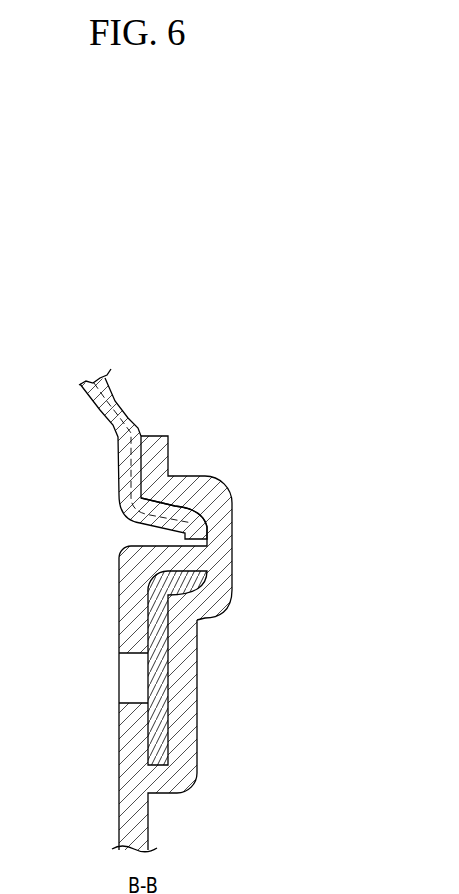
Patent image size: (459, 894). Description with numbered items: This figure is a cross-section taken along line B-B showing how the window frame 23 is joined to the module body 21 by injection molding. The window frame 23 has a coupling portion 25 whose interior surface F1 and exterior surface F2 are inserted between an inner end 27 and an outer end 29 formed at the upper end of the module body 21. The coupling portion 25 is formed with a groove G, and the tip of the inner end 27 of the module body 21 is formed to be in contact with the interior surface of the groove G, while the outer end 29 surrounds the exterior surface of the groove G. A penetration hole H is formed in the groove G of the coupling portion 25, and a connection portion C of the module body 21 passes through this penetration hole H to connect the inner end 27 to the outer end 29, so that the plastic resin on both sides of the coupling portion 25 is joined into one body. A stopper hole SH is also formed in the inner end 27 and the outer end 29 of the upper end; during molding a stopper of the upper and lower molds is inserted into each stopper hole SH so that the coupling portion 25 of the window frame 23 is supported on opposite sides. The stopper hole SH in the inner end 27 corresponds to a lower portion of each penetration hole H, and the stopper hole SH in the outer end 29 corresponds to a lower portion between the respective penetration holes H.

The module body 21 is at (125, 820).
The window frame 23 is at (100, 402).
The coupling portion 25 is at (158, 737).
The inner end 27 is at (120, 583).
The outer end 29 is at (220, 510).
The groove G is at (185, 533).
The penetration hole H is at (197, 544).
The connection portion C is at (182, 571).
The interior surface F1 is at (148, 633).
The exterior surface F2 is at (168, 665).
The stopper hole SH is at (138, 683).